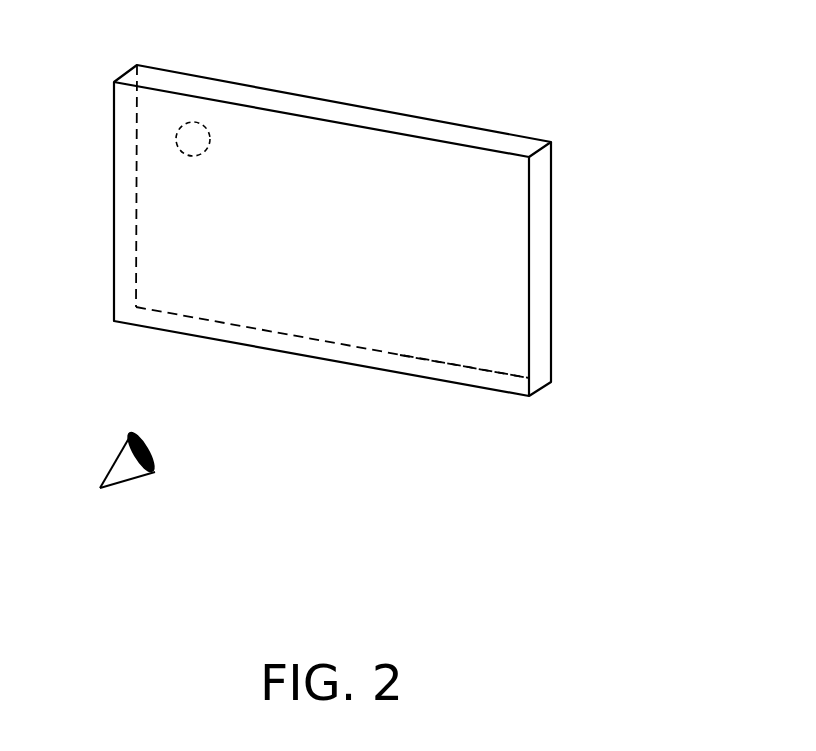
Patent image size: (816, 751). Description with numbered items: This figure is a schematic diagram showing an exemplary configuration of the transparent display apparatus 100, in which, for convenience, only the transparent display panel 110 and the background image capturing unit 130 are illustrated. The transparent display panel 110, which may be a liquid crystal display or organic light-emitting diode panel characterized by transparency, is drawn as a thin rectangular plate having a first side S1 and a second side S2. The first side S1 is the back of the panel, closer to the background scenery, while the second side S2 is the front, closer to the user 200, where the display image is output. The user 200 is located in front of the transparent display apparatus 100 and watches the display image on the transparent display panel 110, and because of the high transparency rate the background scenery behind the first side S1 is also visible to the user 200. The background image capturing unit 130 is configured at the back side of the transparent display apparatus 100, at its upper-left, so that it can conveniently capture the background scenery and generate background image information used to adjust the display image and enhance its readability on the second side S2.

The transparent display apparatus 100 is at (587, 274).
The transparent display panel 110 is at (483, 379).
The background image capturing unit 130 is at (211, 134).
The user 200 is at (137, 506).
The first side S1 is at (345, 102).
The second side S2 is at (181, 221).